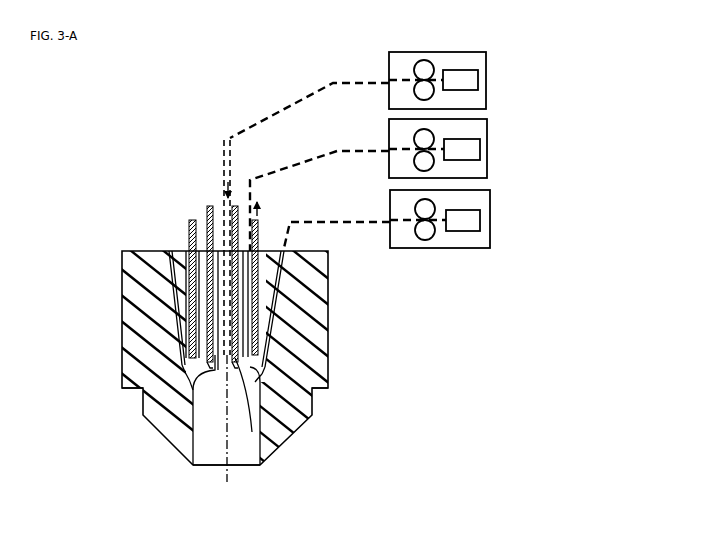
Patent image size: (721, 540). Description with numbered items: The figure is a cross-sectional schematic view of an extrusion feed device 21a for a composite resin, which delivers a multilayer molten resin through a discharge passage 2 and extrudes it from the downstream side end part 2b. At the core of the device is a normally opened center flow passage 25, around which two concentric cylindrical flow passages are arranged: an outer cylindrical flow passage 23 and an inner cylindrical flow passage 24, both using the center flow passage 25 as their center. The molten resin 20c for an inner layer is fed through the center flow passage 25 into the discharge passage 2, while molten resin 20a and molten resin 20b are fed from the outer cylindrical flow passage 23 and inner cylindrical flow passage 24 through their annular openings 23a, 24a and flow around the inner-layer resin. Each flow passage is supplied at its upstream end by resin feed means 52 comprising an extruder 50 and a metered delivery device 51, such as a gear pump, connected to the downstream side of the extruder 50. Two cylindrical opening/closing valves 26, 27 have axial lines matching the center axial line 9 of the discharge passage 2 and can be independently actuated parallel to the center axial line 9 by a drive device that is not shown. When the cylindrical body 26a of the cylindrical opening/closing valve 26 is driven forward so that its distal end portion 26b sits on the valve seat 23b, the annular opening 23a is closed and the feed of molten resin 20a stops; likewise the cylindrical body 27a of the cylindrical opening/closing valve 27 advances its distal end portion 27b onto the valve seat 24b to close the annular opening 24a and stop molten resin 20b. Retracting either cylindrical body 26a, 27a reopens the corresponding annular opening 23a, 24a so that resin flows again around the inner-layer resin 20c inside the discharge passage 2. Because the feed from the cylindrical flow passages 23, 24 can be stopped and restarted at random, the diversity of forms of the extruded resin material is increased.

The discharge passage 2 is at (242, 457).
The downstream side end part 2b is at (200, 466).
The center axial line 9 is at (227, 482).
The molten resin 20a is at (328, 213).
The molten resin 20b is at (306, 156).
The molten resin for an inner layer 20c is at (282, 101).
The extrusion feed device for a composite resin 21a is at (160, 478).
The outer cylindrical flow passage 23 is at (163, 268).
The annular opening 23a is at (188, 397).
The valve seat 23b is at (187, 363).
The inner cylindrical flow passage 24 is at (191, 222).
The annular opening 24a is at (212, 400).
The valve seat 24b is at (165, 318).
The center flow passage 25 is at (225, 162).
The cylindrical opening/closing valve 26 is at (189, 232).
The cylindrical body 26a is at (262, 318).
The distal end portion 26b is at (265, 392).
The cylindrical opening/closing valve 27 is at (210, 205).
The cylindrical body 27a is at (240, 302).
The distal end portion 27b is at (262, 357).
The extruder 50 is at (457, 68).
The metered delivery device 51 is at (428, 60).
The resin feed means 52 is at (486, 80).